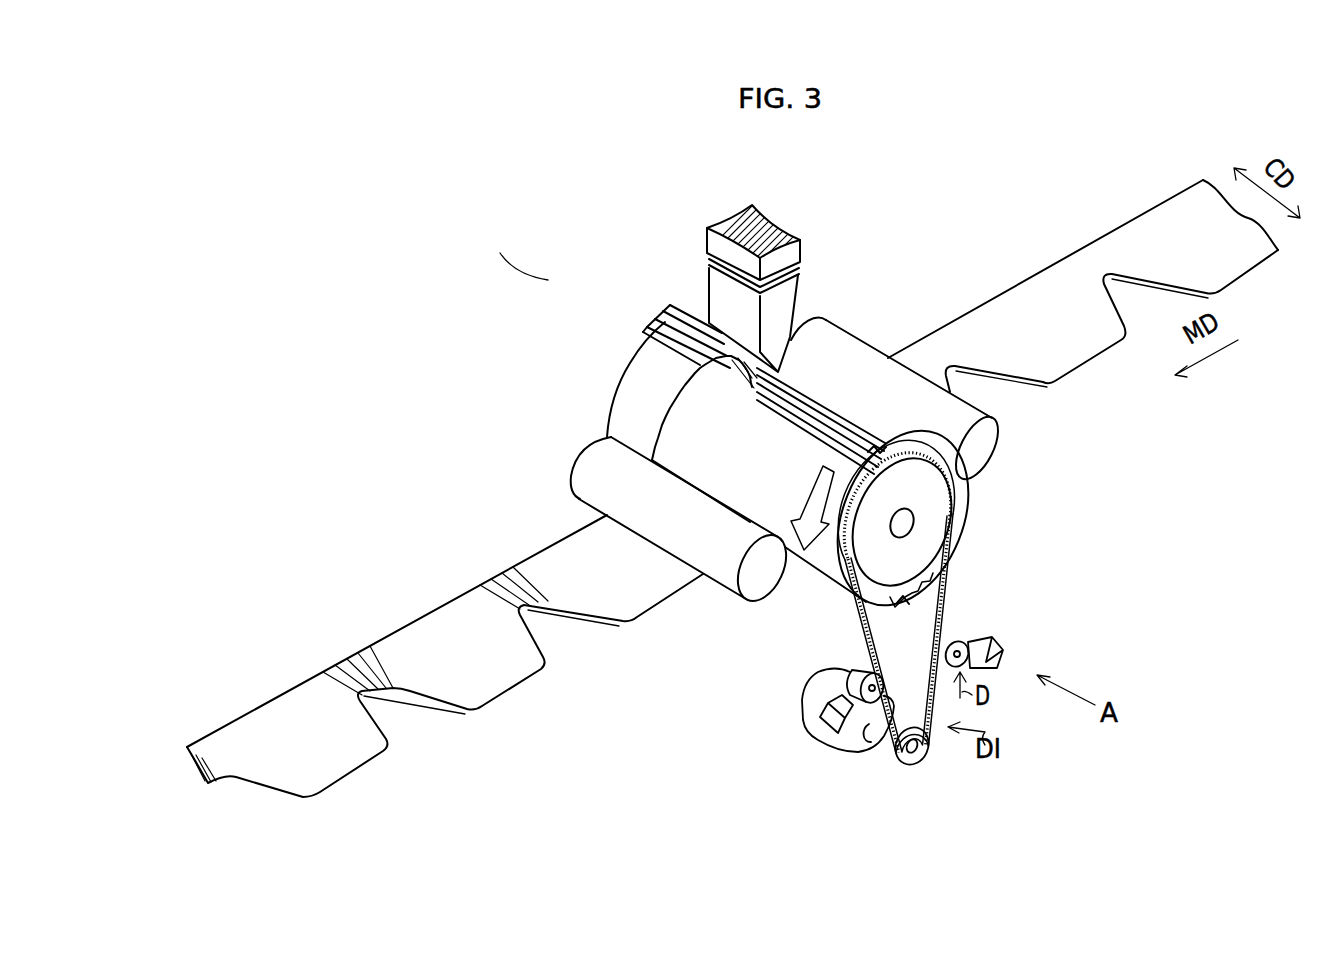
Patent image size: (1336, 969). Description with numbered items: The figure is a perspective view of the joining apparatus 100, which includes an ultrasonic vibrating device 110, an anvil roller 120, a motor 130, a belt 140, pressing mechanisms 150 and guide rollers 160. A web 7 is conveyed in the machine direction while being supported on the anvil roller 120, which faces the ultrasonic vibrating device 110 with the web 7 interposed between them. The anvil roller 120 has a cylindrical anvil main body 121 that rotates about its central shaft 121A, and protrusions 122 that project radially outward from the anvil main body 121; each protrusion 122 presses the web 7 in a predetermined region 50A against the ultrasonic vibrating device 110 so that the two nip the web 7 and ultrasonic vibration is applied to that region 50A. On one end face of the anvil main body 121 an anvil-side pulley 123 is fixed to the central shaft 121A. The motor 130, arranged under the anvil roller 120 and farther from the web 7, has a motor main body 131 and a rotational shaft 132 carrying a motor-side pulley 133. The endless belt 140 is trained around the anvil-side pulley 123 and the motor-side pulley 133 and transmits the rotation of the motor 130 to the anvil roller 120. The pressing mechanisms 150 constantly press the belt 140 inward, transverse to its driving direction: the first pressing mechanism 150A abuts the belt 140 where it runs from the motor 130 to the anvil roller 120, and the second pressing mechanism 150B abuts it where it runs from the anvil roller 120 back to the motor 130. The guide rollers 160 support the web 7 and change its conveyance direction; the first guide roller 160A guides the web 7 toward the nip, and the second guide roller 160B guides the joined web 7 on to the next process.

The web 7 is at (1075, 272).
The predetermined region 50A is at (494, 561).
The joining apparatus 100 is at (536, 282).
The ultrasonic vibrating device 110 is at (793, 300).
The anvil roller 120 is at (843, 476).
The anvil main body 121 is at (813, 577).
The central shaft 121A is at (910, 519).
The protrusion 122 is at (906, 600).
The anvil-side pulley 123 is at (940, 545).
The motor 130 is at (847, 762).
The motor main body 131 is at (813, 717).
The rotational shaft 132 is at (868, 738).
The motor-side pulley 133 is at (912, 772).
The belt 140 is at (950, 588).
The pressing mechanisms 150 is at (915, 677).
The first pressing mechanism 150A is at (1030, 652).
The second pressing mechanism 150B is at (810, 707).
The guide rollers 160 is at (855, 487).
The first guide roller 160A is at (988, 446).
The second guide roller 160B is at (762, 573).